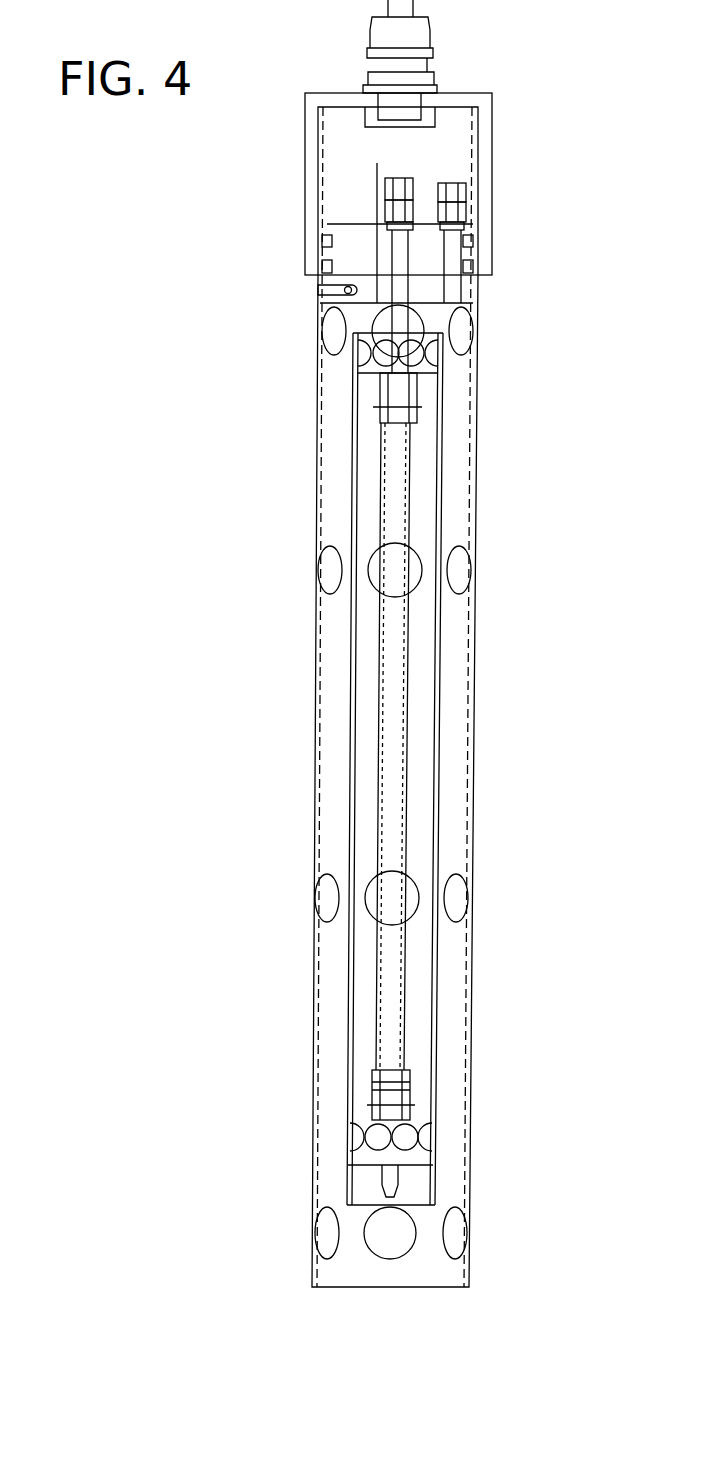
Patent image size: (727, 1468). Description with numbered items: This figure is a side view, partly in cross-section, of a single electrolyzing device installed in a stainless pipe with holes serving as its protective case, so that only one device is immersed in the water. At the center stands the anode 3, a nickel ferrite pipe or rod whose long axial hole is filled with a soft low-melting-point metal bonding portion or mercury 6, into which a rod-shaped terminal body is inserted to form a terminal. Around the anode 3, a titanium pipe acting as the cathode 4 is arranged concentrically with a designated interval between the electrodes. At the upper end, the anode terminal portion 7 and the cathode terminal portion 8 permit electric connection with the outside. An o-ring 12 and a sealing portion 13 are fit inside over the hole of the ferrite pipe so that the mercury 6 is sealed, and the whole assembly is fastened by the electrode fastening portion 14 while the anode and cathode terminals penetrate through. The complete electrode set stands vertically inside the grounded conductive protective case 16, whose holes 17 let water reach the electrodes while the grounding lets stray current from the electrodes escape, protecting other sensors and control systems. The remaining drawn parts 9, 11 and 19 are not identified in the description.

The anode 3 is at (390, 618).
The cathode 4 is at (355, 765).
The metal bonding portion 6 is at (378, 697).
The anode terminal portion 7 is at (407, 177).
The cathode terminal portion 8 is at (462, 205).
The threaded end 9 is at (372, 975).
The guide rollers 11 is at (350, 358).
The o-ring 12 is at (322, 257).
The sealing portion 13 is at (352, 173).
The electrode fastening portion 14 is at (310, 1085).
The conductive protective case 16 is at (320, 455).
The holes 17 is at (395, 900).
The connection box 19 is at (305, 128).